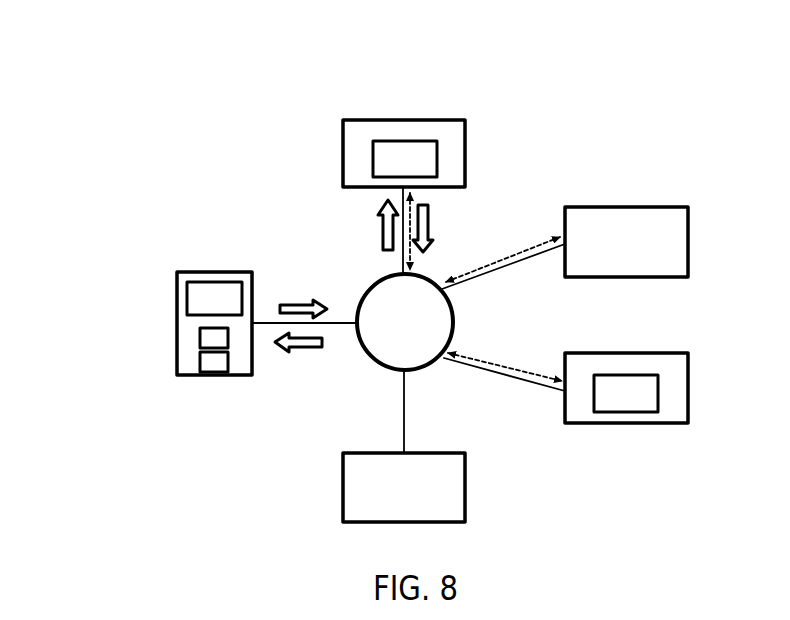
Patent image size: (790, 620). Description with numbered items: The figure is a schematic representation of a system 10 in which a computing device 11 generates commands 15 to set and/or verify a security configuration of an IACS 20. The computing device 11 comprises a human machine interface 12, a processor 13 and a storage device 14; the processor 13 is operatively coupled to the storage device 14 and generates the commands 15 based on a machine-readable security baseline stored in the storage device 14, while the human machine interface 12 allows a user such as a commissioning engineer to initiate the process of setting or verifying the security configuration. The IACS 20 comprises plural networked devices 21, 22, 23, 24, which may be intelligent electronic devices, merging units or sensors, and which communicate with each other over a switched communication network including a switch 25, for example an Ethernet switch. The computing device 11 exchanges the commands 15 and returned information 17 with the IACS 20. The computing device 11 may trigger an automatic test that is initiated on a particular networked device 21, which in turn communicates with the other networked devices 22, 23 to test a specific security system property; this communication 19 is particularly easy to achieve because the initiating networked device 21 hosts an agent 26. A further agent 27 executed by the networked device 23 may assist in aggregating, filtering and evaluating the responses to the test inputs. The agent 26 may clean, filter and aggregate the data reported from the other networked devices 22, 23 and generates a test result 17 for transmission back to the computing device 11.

The system 10 is at (49, 38).
The IACS 20 is at (243, 59).
The networked device 21 is at (382, 127).
The agent 26 is at (368, 169).
The networked device 22 is at (645, 214).
The networked device 23 is at (651, 363).
The agent 27 is at (665, 405).
The networked device 24 is at (423, 460).
The switch 25 is at (431, 322).
The communication 19 is at (486, 287).
The commands 15 is at (339, 259).
The information / test result 17 is at (375, 295).
The computing device 11 is at (194, 296).
The human machine interface 12 is at (242, 273).
The processor 13 is at (182, 328).
The storage device 14 is at (182, 371).